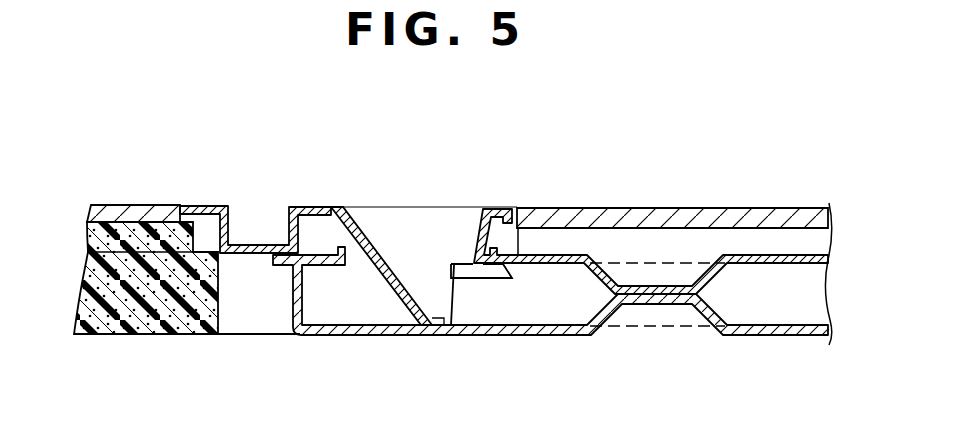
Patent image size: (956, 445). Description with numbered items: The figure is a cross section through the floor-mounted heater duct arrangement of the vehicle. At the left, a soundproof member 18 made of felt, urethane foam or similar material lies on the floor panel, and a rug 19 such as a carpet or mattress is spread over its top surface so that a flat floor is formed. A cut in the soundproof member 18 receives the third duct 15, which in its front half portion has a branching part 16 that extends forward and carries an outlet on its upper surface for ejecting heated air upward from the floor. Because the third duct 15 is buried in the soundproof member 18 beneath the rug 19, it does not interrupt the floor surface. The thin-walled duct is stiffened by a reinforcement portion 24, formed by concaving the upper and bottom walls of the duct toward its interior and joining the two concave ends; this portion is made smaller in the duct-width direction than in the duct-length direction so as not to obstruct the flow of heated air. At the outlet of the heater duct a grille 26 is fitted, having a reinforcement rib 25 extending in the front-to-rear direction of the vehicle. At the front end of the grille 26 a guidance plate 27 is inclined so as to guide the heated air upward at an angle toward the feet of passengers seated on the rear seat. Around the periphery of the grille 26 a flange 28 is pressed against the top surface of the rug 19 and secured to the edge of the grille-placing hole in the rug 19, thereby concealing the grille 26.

The third duct 15 is at (762, 350).
The branching part 16 is at (509, 326).
The soundproof member 18 is at (179, 327).
The rug 19 is at (142, 205).
The reinforcement portion 24 is at (649, 297).
The reinforcement rib 25 is at (429, 214).
The grille 26 is at (338, 200).
The guidance plate 27 is at (398, 272).
The flange 28 is at (503, 209).